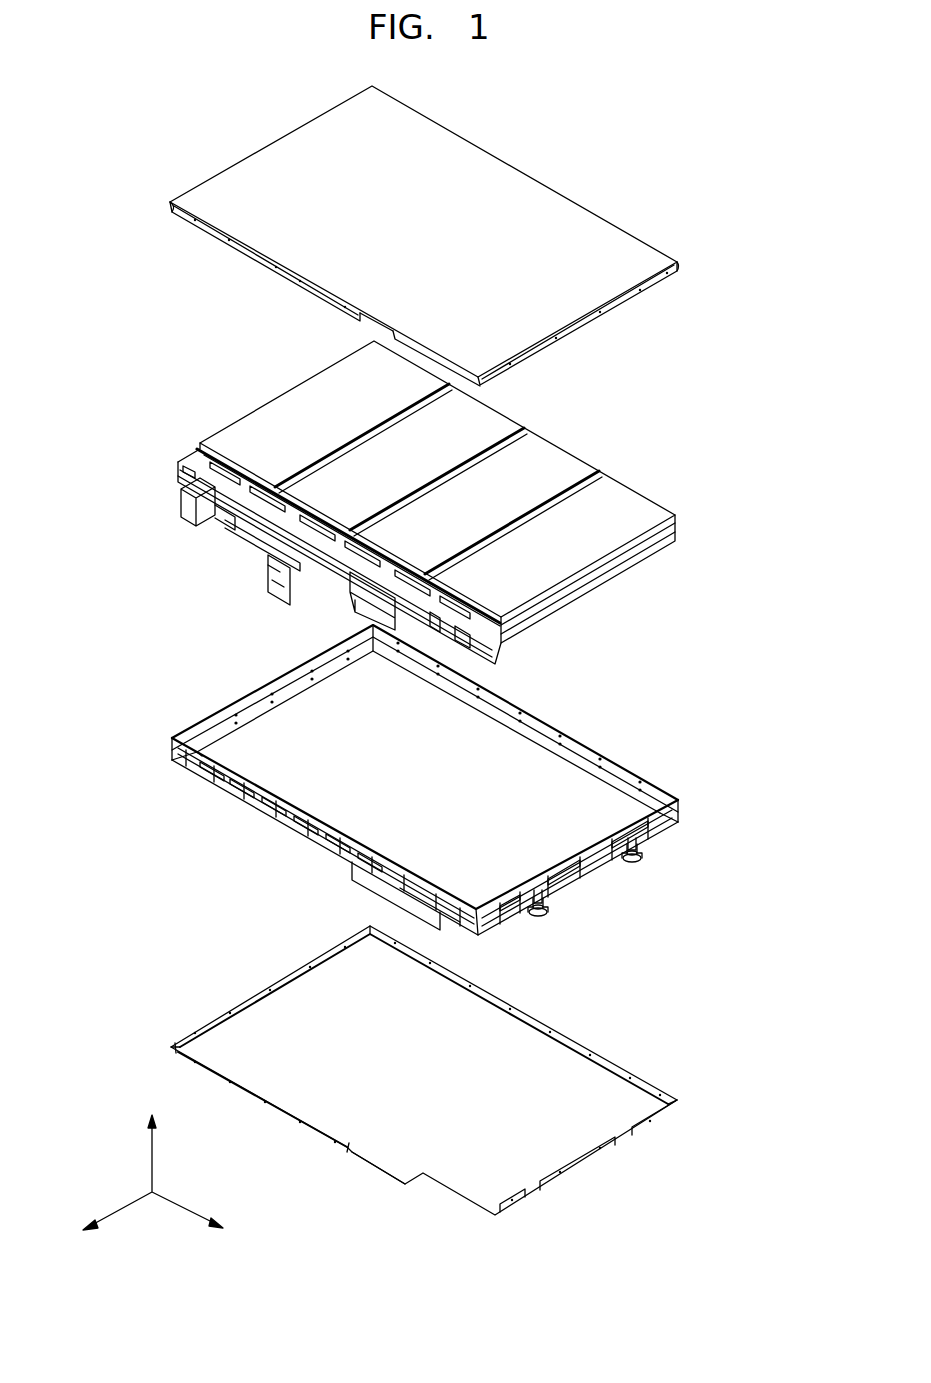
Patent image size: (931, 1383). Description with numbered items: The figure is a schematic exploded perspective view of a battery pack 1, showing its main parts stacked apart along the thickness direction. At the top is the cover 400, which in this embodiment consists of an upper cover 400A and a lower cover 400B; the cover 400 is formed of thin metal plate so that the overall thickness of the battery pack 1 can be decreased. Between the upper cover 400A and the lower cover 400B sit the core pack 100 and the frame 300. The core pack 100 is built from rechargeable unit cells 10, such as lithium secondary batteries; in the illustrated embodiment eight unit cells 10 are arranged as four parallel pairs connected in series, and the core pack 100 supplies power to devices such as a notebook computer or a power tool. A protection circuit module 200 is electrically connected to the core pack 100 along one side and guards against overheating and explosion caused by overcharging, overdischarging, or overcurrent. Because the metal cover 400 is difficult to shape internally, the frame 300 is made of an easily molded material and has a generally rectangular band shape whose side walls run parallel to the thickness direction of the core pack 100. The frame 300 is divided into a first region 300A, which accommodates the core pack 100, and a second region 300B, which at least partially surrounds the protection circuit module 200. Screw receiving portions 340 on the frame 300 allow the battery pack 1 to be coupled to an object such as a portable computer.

The battery pack 1 is at (623, 165).
The unit cell 10 is at (277, 413).
The core pack 100 is at (232, 425).
The protection circuit module 200 is at (176, 463).
The frame 300 is at (171, 737).
The first region 300A is at (355, 720).
The second region 300B is at (191, 740).
The screw receiving portion 340 is at (545, 913).
The cover 400 is at (780, 330).
The upper cover 400A is at (600, 276).
The lower cover 400B is at (637, 1093).